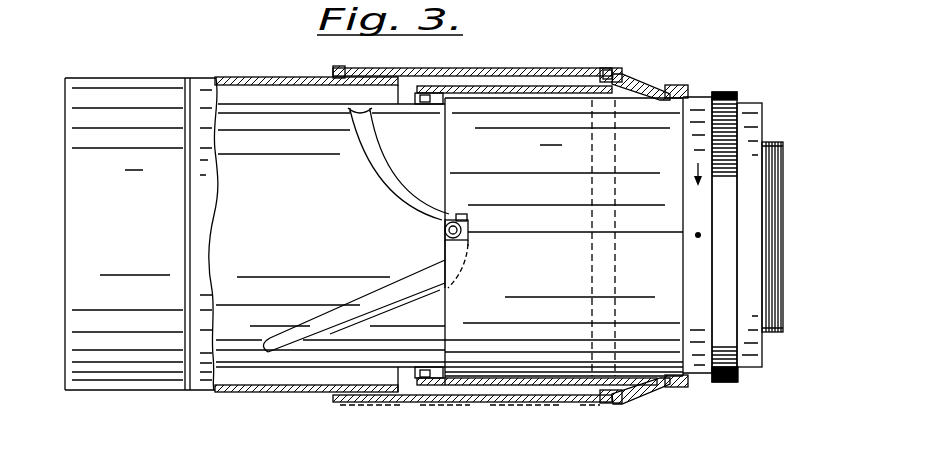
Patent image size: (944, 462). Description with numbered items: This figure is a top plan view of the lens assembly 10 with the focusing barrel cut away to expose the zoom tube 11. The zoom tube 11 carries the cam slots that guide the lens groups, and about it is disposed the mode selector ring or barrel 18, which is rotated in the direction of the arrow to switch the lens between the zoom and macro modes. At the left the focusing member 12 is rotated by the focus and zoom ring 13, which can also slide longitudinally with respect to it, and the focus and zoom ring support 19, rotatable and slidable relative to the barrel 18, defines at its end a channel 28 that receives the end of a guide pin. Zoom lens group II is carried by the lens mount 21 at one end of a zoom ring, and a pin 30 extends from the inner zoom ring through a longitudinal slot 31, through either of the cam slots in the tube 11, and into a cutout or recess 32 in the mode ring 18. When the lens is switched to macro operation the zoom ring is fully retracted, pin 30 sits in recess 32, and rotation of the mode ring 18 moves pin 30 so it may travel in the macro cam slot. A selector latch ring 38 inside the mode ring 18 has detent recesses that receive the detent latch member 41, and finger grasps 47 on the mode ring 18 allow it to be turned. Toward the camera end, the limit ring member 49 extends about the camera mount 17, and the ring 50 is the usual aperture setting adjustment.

The lens assembly 10 is at (243, 67).
The zoom tube 11 is at (290, 205).
The focusing member 12 is at (300, 393).
The focus and zoom ring 13 is at (605, 76).
The camera mount 17 is at (758, 128).
The mode selector ring 18 is at (533, 125).
The focus and zoom ring support 19 is at (483, 86).
The lens mount 21 is at (388, 177).
The channel 28 is at (426, 95).
The pin 30 is at (445, 238).
The longitudinal slot 31 is at (445, 252).
The recess 32 is at (462, 215).
The selector latch ring 38 is at (592, 186).
The detent latch member 41 is at (366, 313).
The finger grasps 47 is at (676, 90).
The limit ring member 49 is at (700, 105).
The aperture setting ring 50 is at (724, 383).